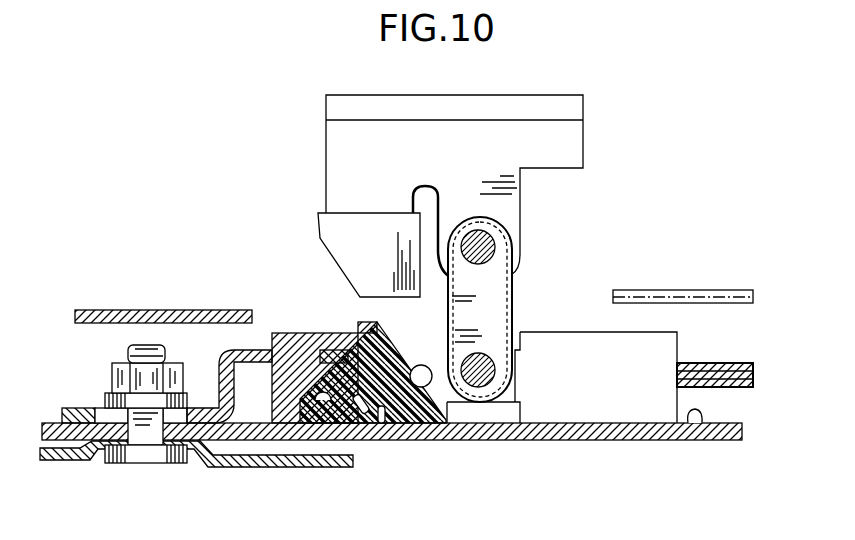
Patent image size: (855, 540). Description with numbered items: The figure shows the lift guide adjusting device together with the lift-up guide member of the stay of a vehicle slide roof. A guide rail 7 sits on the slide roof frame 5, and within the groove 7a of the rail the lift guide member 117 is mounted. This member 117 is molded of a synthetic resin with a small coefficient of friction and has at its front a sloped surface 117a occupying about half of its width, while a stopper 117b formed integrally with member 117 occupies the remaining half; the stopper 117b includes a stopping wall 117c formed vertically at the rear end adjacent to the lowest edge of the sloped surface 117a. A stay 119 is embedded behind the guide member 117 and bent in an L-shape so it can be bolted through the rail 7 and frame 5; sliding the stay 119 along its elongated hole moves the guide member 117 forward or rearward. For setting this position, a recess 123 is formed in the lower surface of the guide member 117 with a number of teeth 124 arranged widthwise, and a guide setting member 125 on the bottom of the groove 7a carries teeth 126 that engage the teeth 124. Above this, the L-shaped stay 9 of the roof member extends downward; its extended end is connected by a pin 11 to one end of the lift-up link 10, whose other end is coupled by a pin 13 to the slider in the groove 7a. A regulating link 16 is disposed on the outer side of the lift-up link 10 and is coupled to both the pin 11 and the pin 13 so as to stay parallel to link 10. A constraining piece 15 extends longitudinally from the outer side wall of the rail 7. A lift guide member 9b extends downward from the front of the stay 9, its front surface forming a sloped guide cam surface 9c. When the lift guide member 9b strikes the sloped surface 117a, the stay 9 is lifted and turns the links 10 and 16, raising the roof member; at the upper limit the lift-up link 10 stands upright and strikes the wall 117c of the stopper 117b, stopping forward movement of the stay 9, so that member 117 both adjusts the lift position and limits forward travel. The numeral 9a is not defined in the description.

The slide roof frame 5 is at (70, 462).
The guide rail 7 is at (722, 443).
The groove 7a is at (697, 428).
The stay 9 is at (575, 138).
The holder block portion 9a is at (488, 175).
The lift guide member 9b is at (372, 265).
The sloped guide cam surface 9c is at (330, 256).
The lift-up link 10 is at (492, 317).
The pin 11 is at (495, 238).
The pin 13 is at (487, 375).
The constraining piece 15 is at (672, 293).
The regulating link 16 is at (512, 328).
The lift guide member 117 is at (300, 328).
The sloped surface 117a is at (417, 425).
The stopper 117b is at (430, 340).
The stopping wall 117c is at (450, 404).
The stay 119 is at (230, 345).
The recess 123 is at (384, 426).
The teeth 124 is at (362, 425).
The guide setting member 125 is at (296, 441).
The teeth 126 is at (328, 422).